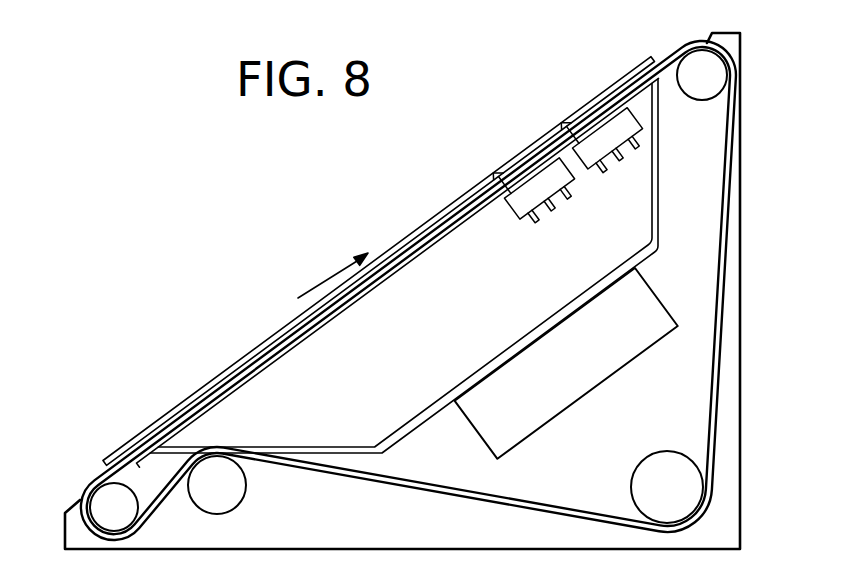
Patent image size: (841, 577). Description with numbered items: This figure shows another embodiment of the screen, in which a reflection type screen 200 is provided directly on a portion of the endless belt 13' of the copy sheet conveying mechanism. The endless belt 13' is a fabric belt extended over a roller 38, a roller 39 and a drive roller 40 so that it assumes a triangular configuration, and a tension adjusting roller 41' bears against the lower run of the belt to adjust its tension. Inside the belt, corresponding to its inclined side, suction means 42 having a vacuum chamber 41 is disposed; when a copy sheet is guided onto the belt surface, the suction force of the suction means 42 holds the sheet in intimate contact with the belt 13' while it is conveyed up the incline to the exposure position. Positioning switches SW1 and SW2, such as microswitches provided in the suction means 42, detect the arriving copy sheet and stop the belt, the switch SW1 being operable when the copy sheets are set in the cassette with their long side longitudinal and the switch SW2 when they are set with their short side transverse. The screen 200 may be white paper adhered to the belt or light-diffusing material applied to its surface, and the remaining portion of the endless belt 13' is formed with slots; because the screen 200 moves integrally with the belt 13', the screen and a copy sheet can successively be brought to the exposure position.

The endless belt 13' is at (402, 291).
The roller 38 is at (127, 507).
The roller 39 is at (690, 62).
The drive roller 40 is at (640, 486).
The vacuum chamber 41 is at (422, 272).
The tension adjusting roller 41' is at (243, 485).
The suction means 42 is at (636, 282).
The reflection type screen 200 is at (420, 231).
The positioning switch SW1 is at (594, 170).
The positioning switch SW2 is at (523, 212).